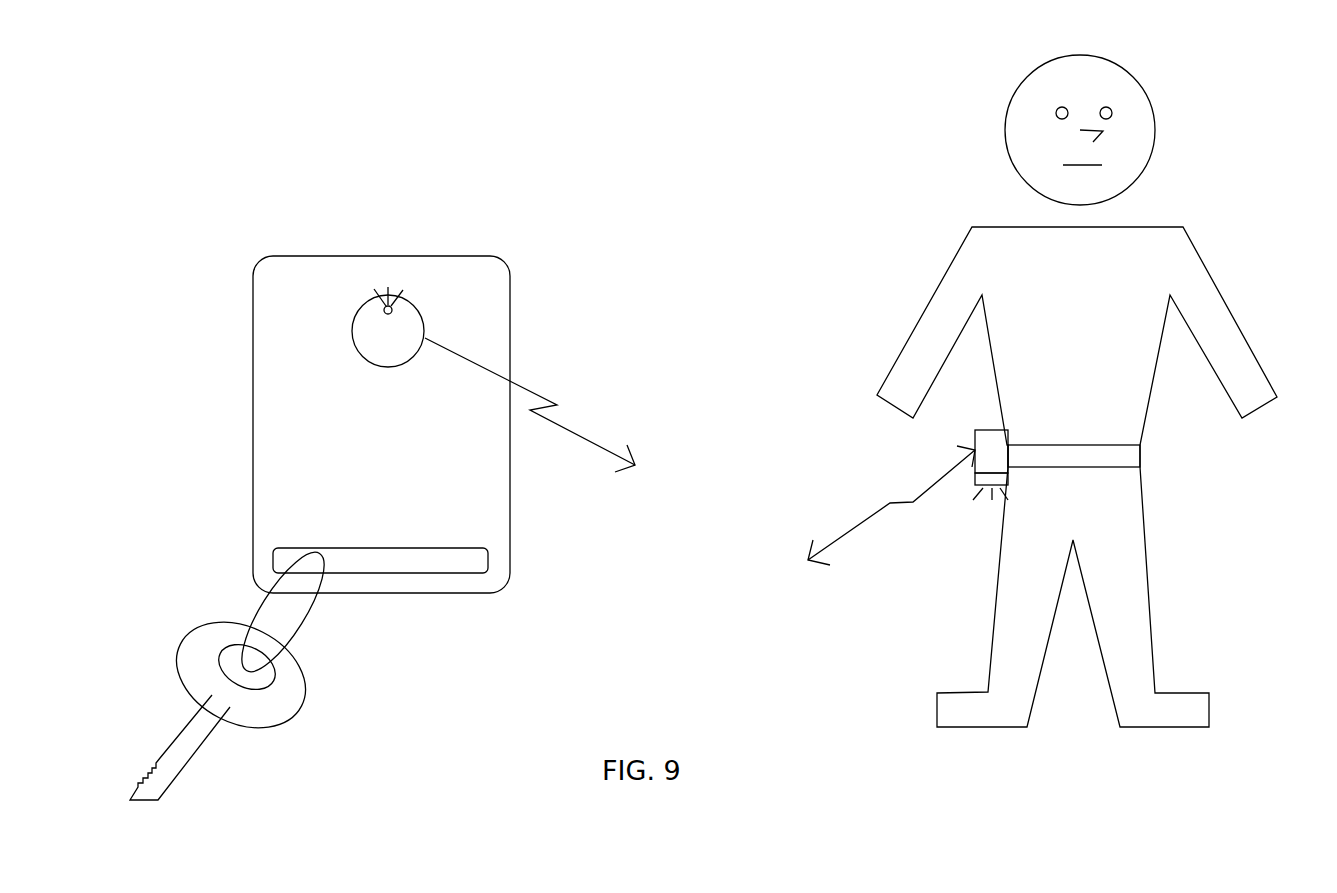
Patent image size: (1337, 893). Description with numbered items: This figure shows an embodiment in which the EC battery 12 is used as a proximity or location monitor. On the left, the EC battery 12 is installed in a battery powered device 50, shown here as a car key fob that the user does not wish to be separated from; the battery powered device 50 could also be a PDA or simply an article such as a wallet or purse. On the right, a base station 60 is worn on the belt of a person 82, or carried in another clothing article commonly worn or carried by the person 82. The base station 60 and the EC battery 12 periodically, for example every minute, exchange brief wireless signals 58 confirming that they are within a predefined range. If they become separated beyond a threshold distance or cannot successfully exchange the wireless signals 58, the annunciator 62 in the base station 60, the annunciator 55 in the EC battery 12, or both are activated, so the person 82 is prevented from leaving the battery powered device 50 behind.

The battery powered device 50 is at (253, 320).
The EC battery 12 is at (424, 317).
The annunciator 55 is at (384, 306).
The wireless signals 58 is at (595, 445).
The person 82 is at (1198, 252).
The base station 60 is at (1008, 438).
The annunciator 62 is at (1003, 480).